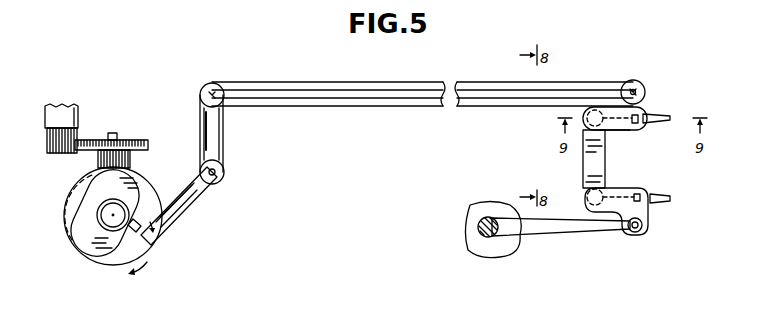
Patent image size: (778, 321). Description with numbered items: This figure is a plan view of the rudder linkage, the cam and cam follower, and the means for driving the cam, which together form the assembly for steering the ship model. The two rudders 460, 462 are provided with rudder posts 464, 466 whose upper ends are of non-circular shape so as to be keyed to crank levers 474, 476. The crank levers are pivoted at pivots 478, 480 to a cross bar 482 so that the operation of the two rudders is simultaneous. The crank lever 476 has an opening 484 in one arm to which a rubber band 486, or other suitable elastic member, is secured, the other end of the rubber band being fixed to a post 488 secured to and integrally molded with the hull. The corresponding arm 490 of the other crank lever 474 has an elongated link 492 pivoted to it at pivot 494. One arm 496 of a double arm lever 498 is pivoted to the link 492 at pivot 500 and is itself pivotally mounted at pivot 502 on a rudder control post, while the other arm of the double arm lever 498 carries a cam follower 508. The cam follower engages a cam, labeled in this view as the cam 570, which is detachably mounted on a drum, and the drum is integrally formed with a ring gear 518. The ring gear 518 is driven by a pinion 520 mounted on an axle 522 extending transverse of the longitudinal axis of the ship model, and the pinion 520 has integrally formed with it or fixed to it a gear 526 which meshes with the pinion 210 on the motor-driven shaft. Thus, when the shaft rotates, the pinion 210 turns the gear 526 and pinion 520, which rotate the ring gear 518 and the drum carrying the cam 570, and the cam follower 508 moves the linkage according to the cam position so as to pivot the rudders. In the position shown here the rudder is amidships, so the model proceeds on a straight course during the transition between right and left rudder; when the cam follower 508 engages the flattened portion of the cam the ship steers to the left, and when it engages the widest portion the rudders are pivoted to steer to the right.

The pinion 210 is at (48, 147).
The gear 526 is at (136, 141).
The axle 522 is at (117, 133).
The pinion 520 is at (98, 160).
The ring gear 518 is at (66, 213).
The eccentric cam 570 is at (118, 252).
The cam follower 508 is at (141, 226).
The double arm lever 498 is at (198, 214).
The pivot 502 is at (222, 170).
The arm 496 is at (225, 133).
The pivot 500 is at (225, 80).
The elongated link 492 is at (470, 78).
The pivot 494 is at (633, 80).
The arm 490 is at (644, 87).
The rudder post 464 is at (638, 116).
The pivot 478 is at (583, 111).
The rudder 460 is at (662, 112).
The crank lever 474 is at (623, 131).
The cross bar 482 is at (583, 155).
The crank lever 476 is at (625, 183).
The pivot 480 is at (588, 192).
The rudder post 466 is at (639, 196).
The rudder 462 is at (668, 203).
The opening 484 is at (643, 228).
The rubber band 486 is at (587, 232).
The post 488 is at (477, 227).